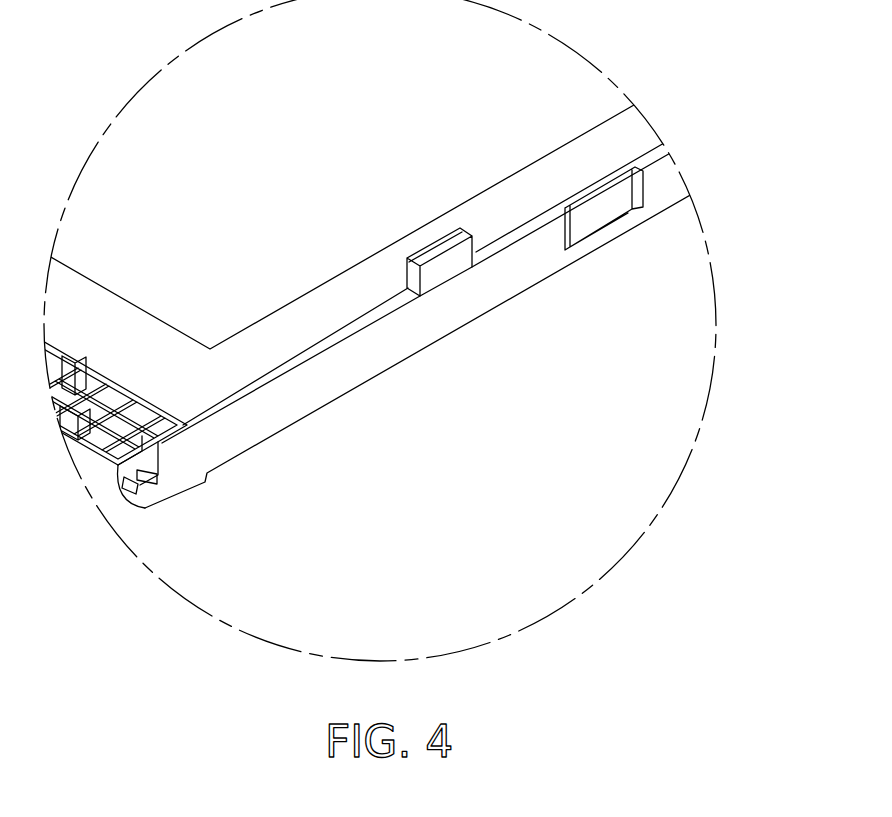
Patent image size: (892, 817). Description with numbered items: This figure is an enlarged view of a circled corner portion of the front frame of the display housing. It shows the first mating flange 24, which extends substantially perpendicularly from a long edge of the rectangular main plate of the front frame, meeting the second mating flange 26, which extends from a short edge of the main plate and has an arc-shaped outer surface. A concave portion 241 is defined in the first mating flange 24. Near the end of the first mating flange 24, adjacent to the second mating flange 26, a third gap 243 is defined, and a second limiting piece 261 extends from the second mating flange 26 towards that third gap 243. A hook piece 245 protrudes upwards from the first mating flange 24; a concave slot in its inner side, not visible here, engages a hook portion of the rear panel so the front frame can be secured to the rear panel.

The first mating flange 24 is at (338, 375).
The concave portion 241 is at (597, 212).
The third gap 243 is at (150, 466).
The hook piece 245 is at (438, 253).
The second mating flange 26 is at (98, 480).
The second limiting piece 261 is at (132, 481).